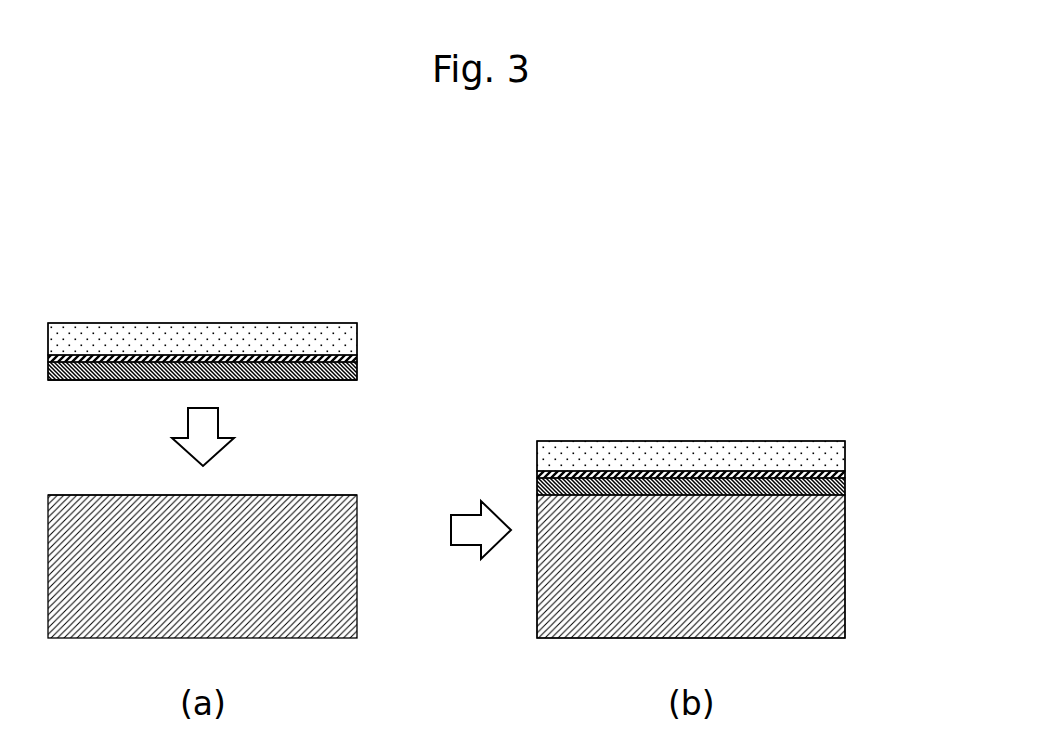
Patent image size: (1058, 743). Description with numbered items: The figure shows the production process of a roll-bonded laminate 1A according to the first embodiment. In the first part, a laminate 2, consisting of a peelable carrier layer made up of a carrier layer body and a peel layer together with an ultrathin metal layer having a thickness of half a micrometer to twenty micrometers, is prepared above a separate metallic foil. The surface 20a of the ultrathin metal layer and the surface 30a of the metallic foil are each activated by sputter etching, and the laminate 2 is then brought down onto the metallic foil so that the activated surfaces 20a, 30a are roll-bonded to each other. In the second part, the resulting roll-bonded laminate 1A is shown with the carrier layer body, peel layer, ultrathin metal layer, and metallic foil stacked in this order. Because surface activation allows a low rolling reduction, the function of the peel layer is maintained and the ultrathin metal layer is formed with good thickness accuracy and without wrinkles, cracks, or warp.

The laminate 2 is at (258, 318).
The surface of the ultrathin metal layer 20a is at (108, 382).
The surface of the metallic foil 30a is at (296, 495).
The roll-bonded laminate 1A is at (748, 487).